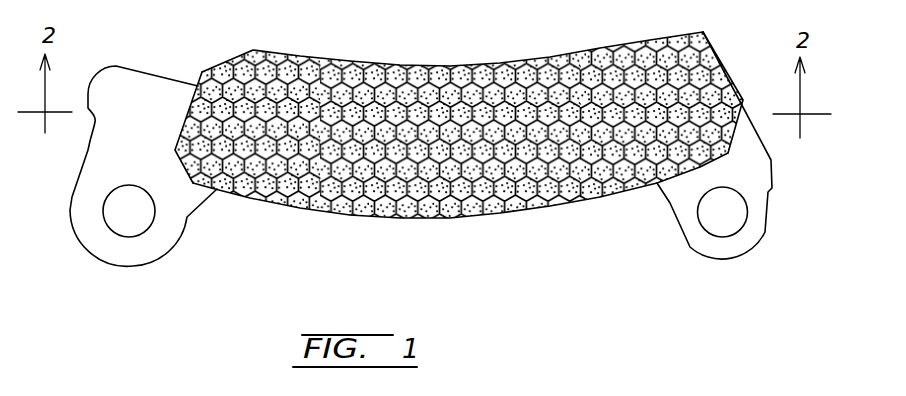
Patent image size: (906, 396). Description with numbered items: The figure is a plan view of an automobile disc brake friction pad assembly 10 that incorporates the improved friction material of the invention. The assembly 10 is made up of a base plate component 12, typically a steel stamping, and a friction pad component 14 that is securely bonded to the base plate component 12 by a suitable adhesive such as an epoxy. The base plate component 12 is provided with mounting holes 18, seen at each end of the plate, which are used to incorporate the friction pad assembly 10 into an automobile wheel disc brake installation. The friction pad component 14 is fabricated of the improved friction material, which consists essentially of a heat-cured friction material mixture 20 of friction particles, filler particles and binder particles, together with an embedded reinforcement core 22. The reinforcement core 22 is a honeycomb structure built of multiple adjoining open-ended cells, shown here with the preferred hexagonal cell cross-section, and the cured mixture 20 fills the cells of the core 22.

The disc brake friction pad assembly 10 is at (447, 153).
The base plate component 12 is at (772, 190).
The friction pad component 14 is at (459, 126).
The mounting holes 18 is at (118, 234).
The heat-cured friction material mixture 20 is at (352, 207).
The embedded reinforcement core 22 is at (298, 60).